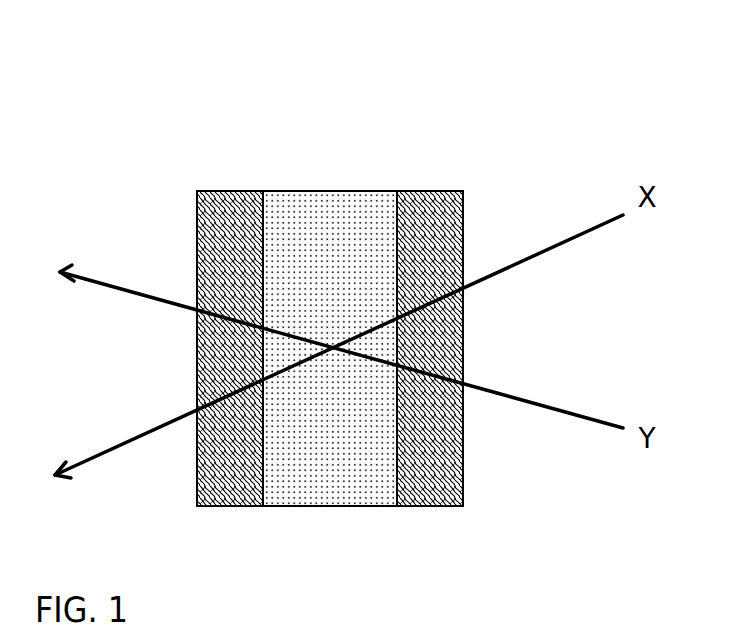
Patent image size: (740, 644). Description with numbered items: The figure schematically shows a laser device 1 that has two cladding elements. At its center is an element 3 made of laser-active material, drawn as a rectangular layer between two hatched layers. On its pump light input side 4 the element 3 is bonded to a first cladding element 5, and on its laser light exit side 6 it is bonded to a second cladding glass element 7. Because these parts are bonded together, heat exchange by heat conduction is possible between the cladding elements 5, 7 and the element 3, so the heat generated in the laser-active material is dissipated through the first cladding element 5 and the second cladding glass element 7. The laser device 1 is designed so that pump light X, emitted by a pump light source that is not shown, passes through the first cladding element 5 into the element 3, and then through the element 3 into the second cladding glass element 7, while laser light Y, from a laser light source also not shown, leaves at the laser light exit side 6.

The laser device 1 is at (470, 108).
The element made of laser-active material 3 is at (341, 200).
The pump light input side 4 is at (398, 450).
The first cladding element 5 is at (433, 200).
The laser light exit side 6 is at (265, 450).
The second cladding glass element 7 is at (241, 200).